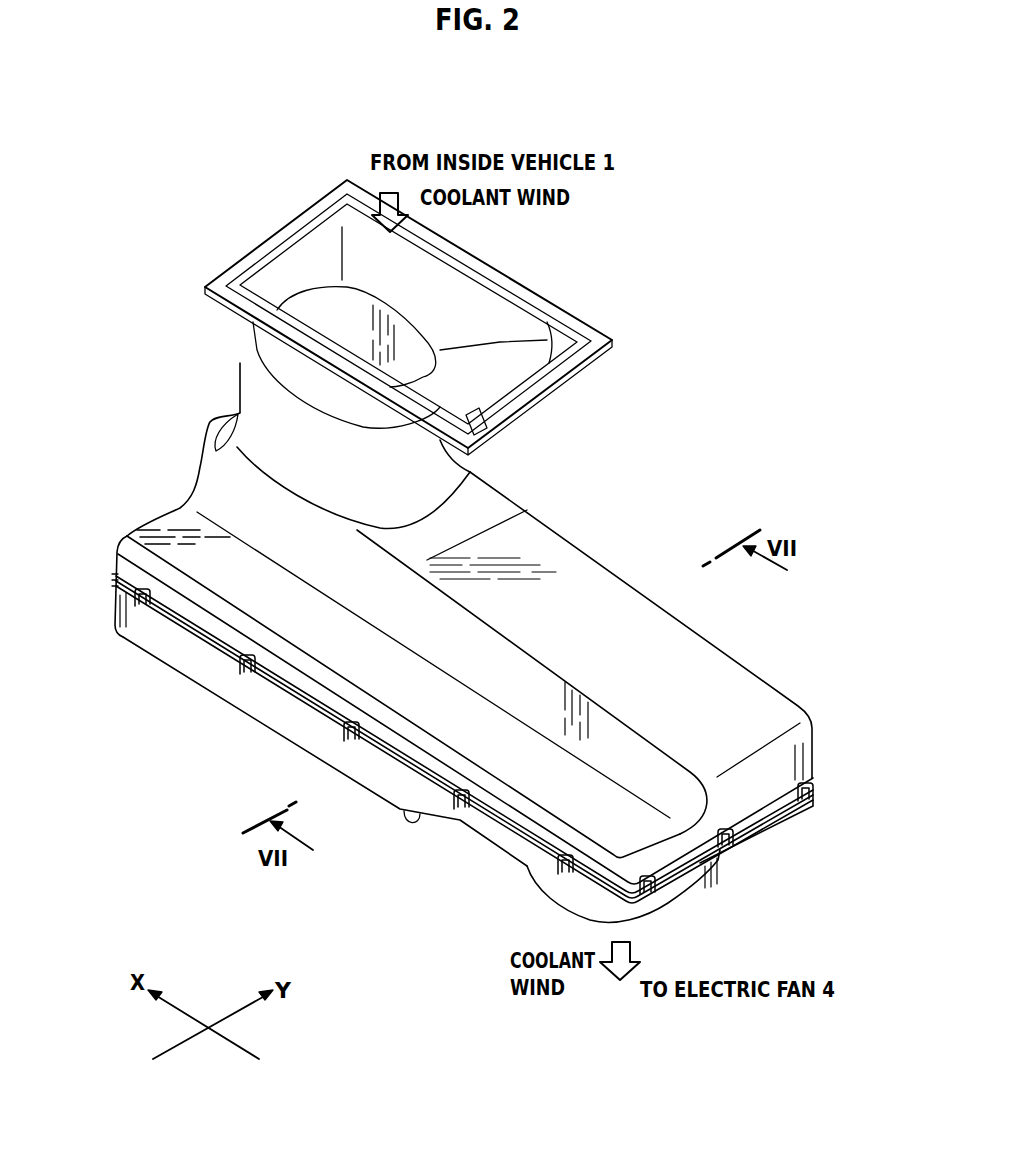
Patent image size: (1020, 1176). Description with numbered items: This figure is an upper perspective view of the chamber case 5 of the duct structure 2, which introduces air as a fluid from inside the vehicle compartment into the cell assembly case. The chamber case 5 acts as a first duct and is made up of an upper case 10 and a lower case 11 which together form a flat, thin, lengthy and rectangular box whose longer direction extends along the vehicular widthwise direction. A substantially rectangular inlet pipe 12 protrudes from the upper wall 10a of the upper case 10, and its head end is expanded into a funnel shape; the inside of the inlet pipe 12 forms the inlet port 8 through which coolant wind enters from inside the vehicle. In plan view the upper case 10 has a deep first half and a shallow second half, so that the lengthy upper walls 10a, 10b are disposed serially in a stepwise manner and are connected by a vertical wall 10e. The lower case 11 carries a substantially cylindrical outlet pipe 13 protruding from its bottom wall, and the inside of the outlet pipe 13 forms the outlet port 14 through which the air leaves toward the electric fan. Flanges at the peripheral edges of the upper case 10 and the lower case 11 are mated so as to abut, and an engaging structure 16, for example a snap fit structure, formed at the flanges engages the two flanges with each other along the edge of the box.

The duct structure 2 is at (659, 231).
The chamber case 5 is at (770, 343).
The inlet port 8 is at (546, 288).
The upper case 10 is at (137, 528).
The upper wall 10a is at (717, 703).
The upper wall 10b is at (192, 536).
The vertical wall 10e is at (527, 690).
The lower case 11 is at (124, 632).
The inlet pipe 12 is at (231, 389).
The outlet pipe 13 is at (721, 868).
The outlet port 14 is at (539, 901).
The engaging structure 16 is at (352, 742).